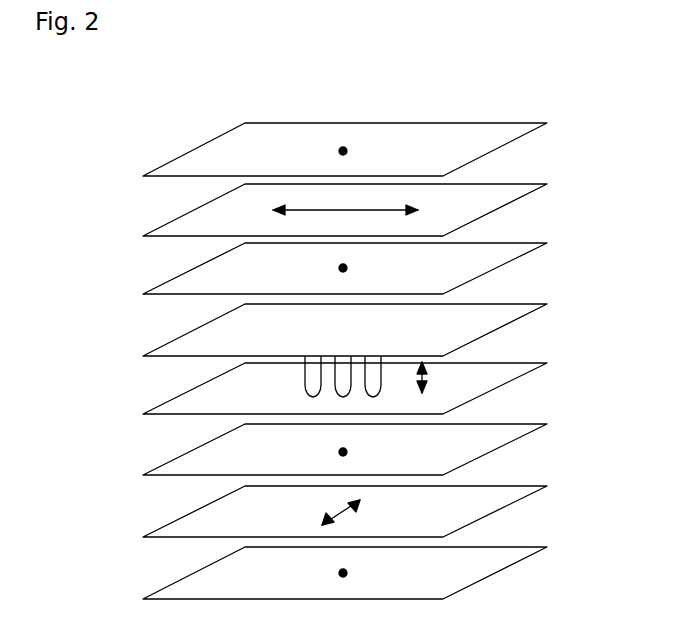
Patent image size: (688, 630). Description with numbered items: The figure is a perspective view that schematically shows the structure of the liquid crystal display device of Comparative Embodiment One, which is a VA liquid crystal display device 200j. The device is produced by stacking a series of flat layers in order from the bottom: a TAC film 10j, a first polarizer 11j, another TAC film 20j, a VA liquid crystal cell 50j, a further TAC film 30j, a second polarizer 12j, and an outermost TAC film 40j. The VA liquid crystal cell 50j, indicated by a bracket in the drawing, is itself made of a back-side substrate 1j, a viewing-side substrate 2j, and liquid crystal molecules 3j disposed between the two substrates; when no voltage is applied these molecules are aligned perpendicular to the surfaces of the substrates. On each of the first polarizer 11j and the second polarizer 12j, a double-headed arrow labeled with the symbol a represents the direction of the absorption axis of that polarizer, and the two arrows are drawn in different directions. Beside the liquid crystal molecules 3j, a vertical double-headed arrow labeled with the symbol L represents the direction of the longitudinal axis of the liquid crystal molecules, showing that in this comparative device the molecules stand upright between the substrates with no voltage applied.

The VA liquid crystal display device 200j is at (592, 92).
The TAC film 40j is at (482, 145).
The second polarizer 12j is at (482, 203).
The TAC film 30j is at (482, 263).
The VA liquid crystal cell 50j is at (560, 302).
The viewing-side substrate 2j is at (187, 338).
The liquid crystal molecules 3j is at (307, 375).
The back-side substrate 1j is at (175, 403).
The direction of the longitudinal axis of the liquid crystal molecules L is at (427, 375).
The TAC film 20j is at (482, 443).
The first polarizer 11j is at (482, 508).
The TAC film 10j is at (482, 568).
The direction of the absorption axis of each polarizer a is at (276, 209).